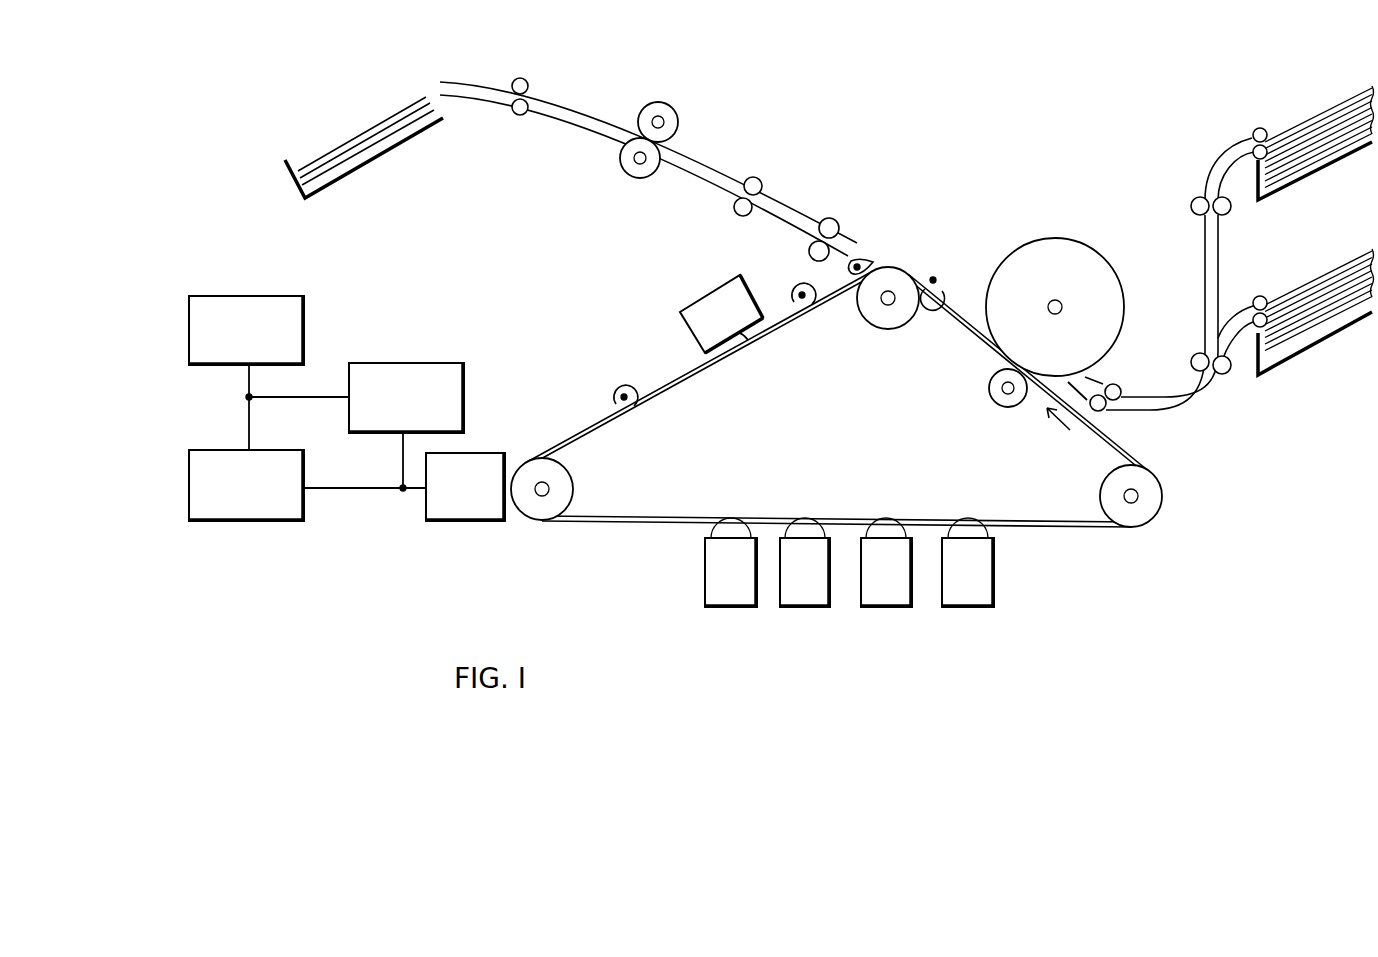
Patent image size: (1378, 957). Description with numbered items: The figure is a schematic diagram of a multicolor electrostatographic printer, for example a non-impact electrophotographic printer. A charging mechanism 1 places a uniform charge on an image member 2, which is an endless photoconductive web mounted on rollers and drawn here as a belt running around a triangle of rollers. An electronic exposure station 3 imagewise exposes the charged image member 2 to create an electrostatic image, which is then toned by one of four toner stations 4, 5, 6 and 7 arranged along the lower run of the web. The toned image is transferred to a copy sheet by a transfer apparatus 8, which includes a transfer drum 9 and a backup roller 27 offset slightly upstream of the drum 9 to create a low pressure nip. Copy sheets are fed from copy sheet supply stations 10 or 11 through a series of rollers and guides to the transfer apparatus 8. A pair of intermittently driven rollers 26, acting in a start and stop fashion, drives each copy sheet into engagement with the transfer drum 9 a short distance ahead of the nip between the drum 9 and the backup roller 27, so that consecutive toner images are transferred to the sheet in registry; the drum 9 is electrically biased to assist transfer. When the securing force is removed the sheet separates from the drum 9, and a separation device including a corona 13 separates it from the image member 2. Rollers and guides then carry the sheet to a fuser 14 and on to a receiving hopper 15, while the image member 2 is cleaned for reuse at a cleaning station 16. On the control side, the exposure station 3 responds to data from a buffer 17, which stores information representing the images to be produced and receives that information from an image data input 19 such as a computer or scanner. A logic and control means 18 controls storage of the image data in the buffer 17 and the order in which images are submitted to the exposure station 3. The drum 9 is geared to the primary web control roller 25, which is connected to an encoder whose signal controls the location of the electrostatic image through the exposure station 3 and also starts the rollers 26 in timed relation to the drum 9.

The charging mechanism 1 is at (612, 398).
The image member 2 is at (707, 376).
The electronic exposure station 3 is at (456, 522).
The toner station 4 is at (740, 608).
The toner station 5 is at (814, 608).
The toner station 6 is at (894, 608).
The toner station 7 is at (978, 608).
The transfer apparatus 8 is at (1117, 237).
The transfer drum 9 is at (1032, 240).
The copy sheet supply station 10 is at (1312, 172).
The copy sheet supply station 11 is at (1320, 334).
The corona 13 is at (932, 268).
The fuser 14 is at (677, 120).
The receiving hopper 15 is at (380, 158).
The cleaning station 16 is at (724, 286).
The buffer 17 is at (274, 451).
The logic and control means 18 is at (430, 363).
The image data input 19 is at (286, 296).
The primary web control roller 25 is at (537, 510).
The intermittently driven rollers 26 is at (1120, 386).
The backup roller 27 is at (990, 396).